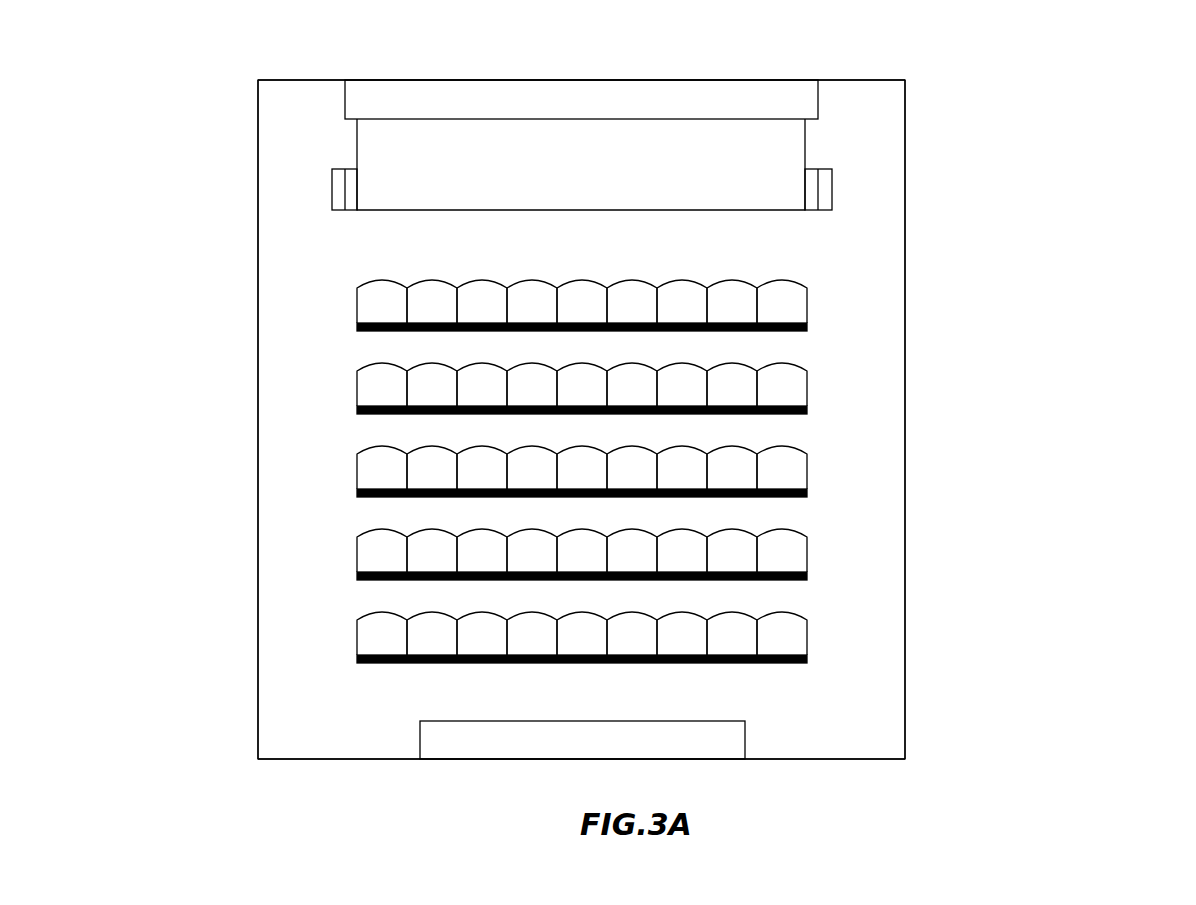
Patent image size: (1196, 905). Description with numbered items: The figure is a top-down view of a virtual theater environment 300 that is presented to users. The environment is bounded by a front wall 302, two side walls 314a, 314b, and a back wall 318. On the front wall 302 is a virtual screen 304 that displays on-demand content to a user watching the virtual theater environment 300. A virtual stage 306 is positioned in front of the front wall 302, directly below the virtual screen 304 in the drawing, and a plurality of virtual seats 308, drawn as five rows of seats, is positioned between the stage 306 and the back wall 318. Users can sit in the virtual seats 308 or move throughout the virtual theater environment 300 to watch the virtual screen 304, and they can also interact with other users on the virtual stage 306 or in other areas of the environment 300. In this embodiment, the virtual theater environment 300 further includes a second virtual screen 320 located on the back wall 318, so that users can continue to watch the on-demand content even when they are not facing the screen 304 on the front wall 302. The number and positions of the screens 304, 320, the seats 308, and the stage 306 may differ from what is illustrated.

The virtual theater environment 300 is at (1087, 97).
The front wall 302 is at (302, 80).
The virtual screen 304 is at (581, 99).
The virtual stage 306 is at (582, 164).
The virtual seats 308 is at (357, 477).
The side wall 314a is at (258, 157).
The side wall 314b is at (906, 200).
The back wall 318 is at (338, 760).
The second virtual screen 320 is at (582, 740).